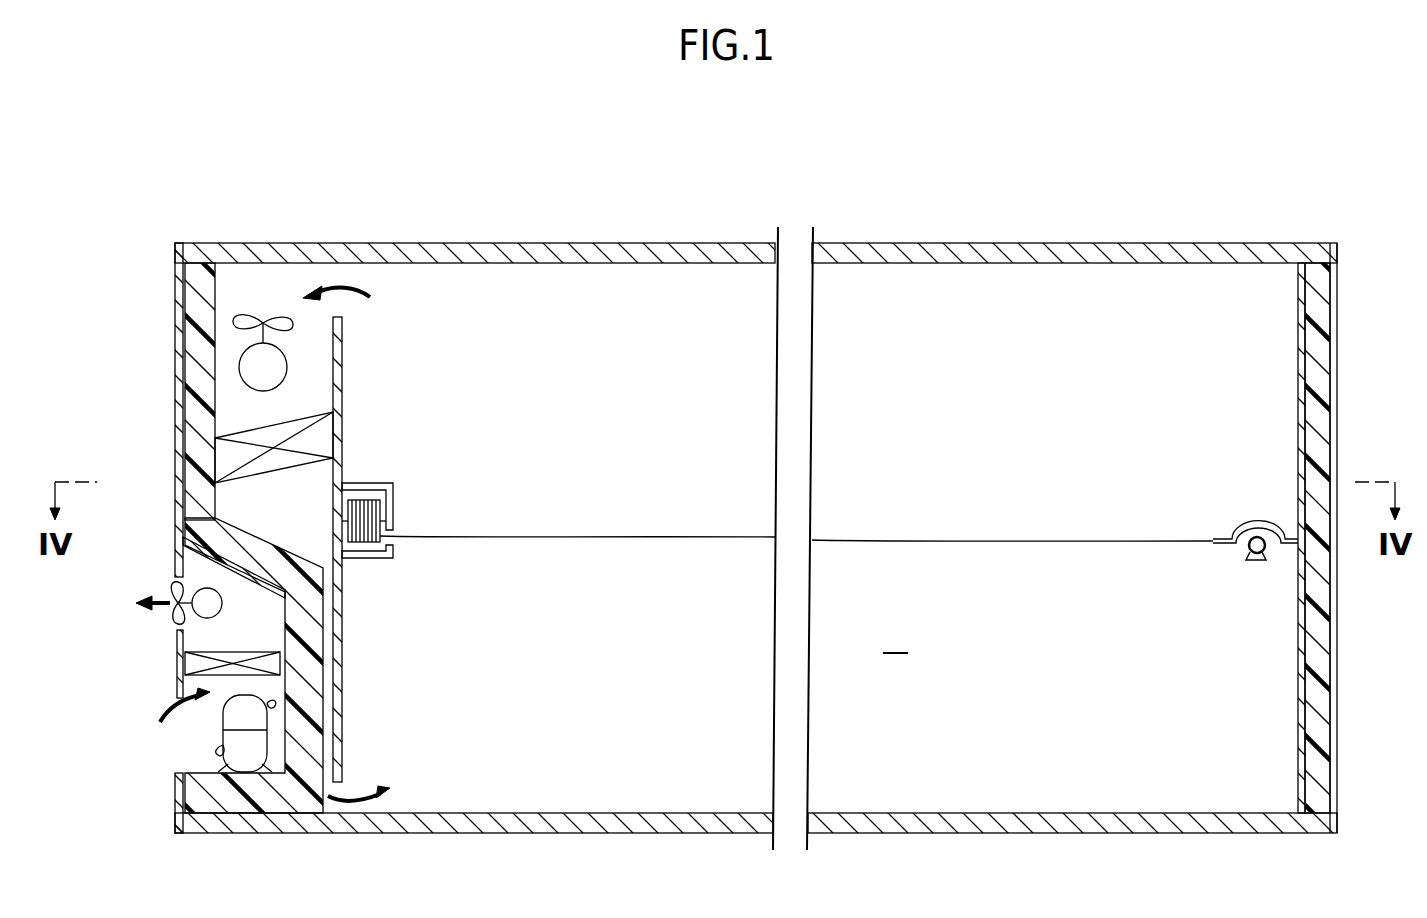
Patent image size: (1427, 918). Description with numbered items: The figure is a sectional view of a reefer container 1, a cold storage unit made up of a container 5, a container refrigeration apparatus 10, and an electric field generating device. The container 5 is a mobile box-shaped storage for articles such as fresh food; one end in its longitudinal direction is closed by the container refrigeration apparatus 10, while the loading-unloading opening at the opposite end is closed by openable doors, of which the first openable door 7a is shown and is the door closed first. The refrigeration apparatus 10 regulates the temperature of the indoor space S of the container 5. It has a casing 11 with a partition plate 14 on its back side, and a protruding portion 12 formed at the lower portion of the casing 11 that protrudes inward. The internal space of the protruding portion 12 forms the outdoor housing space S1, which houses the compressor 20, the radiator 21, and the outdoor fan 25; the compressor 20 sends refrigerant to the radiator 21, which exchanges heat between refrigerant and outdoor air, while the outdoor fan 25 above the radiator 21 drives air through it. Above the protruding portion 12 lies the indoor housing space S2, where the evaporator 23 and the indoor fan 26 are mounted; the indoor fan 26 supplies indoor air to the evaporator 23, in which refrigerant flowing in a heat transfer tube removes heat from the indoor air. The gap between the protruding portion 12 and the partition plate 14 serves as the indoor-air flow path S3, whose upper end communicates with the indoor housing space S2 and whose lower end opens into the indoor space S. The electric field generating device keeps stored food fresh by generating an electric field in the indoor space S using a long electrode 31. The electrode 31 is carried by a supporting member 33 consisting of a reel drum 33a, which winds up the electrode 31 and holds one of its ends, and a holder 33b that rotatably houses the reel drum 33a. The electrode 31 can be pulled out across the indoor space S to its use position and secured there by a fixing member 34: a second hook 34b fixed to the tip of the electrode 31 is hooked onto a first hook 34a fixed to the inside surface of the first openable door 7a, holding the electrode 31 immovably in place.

The reefer container 1 is at (940, 205).
The container 5 is at (662, 243).
The first openable door 7a is at (1318, 393).
The container refrigeration apparatus 10 is at (148, 318).
The casing 11 is at (178, 488).
The protruding portion 12 is at (232, 533).
The partition plate 14 is at (343, 350).
The compressor 20 is at (225, 743).
The radiator 21 is at (237, 655).
The evaporator 23 is at (292, 460).
The outdoor fan 25 is at (172, 617).
The indoor fan 26 is at (232, 323).
The electrode 31 is at (600, 536).
The supporting member 33 is at (415, 508).
The reel drum 33a is at (380, 510).
The holder 33b is at (368, 558).
The fixing member 34 is at (1224, 528).
The first hook 34a is at (1285, 548).
The second hook 34b is at (1226, 547).
The indoor space S is at (895, 636).
The outdoor housing space S1 is at (200, 572).
The indoor housing space S2 is at (268, 290).
The indoor-air flow path S3 is at (330, 630).